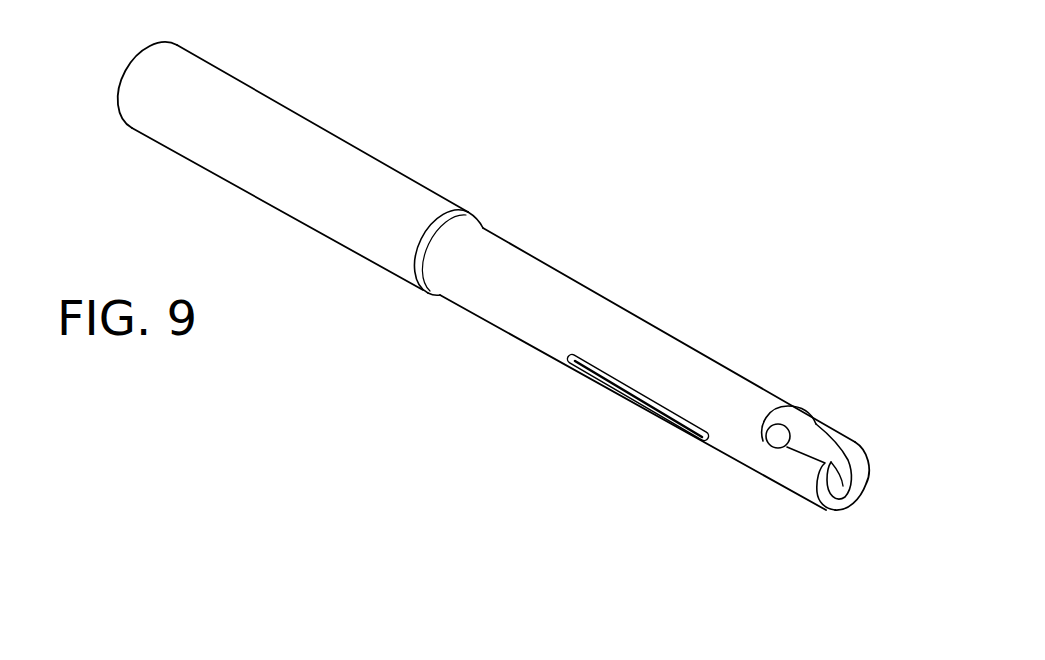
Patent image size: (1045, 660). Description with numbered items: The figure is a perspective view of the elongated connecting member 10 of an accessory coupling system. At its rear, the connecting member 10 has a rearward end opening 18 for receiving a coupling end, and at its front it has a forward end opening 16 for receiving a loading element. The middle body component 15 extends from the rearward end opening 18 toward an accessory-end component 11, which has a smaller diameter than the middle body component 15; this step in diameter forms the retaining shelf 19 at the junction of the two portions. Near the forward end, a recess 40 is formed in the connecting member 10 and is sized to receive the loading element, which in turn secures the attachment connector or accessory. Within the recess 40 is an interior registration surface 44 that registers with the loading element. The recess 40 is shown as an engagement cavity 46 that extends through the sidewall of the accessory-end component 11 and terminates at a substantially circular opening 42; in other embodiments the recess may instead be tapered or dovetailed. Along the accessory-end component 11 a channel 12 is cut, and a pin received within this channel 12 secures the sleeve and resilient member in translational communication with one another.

The connecting member 10 is at (452, 386).
The accessory-end component 11 is at (573, 280).
The channel 12 is at (687, 433).
The middle body component 15 is at (352, 143).
The forward end opening 16 is at (843, 483).
The rearward end opening 18 is at (127, 100).
The retaining shelf 19 is at (468, 213).
The recess 40 is at (826, 398).
The substantially circular opening 42 is at (770, 413).
The interior registration surface 44 is at (808, 442).
The engagement cavity 46 is at (818, 460).